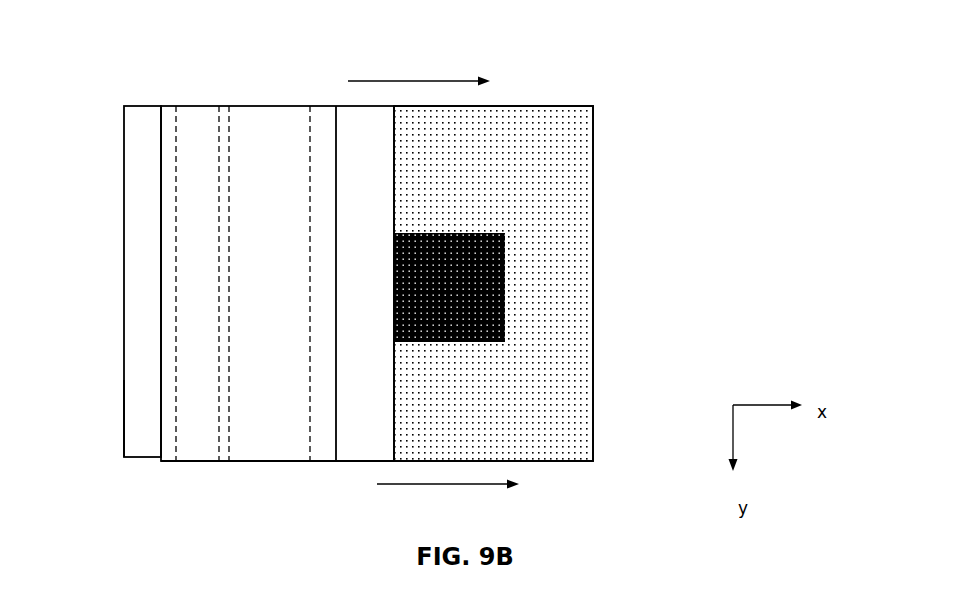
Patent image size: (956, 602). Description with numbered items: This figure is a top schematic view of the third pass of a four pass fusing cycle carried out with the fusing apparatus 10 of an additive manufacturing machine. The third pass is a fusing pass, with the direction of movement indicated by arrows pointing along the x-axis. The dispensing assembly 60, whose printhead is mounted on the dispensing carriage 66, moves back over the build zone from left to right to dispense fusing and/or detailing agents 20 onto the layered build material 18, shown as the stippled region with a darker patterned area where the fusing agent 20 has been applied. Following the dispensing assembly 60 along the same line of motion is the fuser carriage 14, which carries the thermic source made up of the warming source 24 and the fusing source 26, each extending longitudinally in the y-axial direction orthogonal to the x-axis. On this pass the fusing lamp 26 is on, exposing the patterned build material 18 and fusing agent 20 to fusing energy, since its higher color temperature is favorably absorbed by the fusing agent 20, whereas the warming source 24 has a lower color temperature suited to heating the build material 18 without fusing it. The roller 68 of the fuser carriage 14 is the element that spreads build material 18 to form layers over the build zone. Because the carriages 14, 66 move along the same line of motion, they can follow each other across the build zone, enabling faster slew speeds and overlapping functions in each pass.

The fusing apparatus 10 is at (218, 98).
The carriage 14 is at (123, 253).
The build material 18 is at (553, 405).
The fusing agent 20 is at (505, 277).
The warming source 24 is at (188, 284).
The fusing source 26 is at (256, 284).
The dispensing assembly 60 is at (356, 284).
The dispensing carriage 66 is at (310, 462).
The roller 68 is at (140, 405).